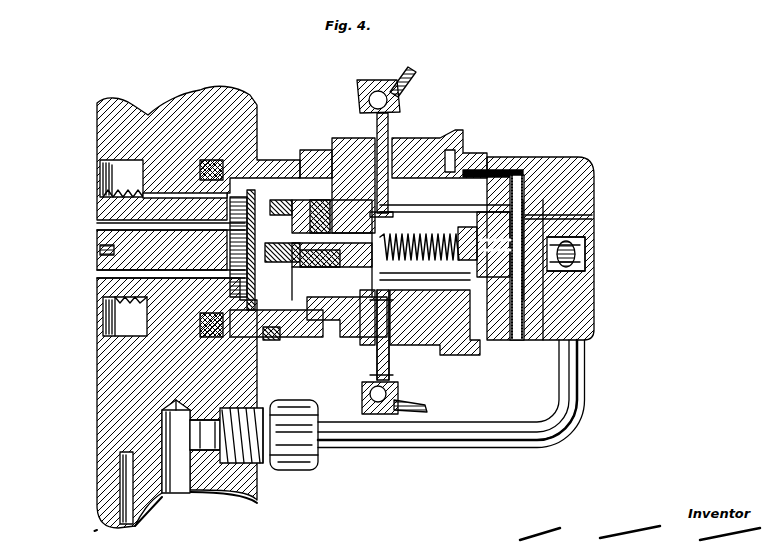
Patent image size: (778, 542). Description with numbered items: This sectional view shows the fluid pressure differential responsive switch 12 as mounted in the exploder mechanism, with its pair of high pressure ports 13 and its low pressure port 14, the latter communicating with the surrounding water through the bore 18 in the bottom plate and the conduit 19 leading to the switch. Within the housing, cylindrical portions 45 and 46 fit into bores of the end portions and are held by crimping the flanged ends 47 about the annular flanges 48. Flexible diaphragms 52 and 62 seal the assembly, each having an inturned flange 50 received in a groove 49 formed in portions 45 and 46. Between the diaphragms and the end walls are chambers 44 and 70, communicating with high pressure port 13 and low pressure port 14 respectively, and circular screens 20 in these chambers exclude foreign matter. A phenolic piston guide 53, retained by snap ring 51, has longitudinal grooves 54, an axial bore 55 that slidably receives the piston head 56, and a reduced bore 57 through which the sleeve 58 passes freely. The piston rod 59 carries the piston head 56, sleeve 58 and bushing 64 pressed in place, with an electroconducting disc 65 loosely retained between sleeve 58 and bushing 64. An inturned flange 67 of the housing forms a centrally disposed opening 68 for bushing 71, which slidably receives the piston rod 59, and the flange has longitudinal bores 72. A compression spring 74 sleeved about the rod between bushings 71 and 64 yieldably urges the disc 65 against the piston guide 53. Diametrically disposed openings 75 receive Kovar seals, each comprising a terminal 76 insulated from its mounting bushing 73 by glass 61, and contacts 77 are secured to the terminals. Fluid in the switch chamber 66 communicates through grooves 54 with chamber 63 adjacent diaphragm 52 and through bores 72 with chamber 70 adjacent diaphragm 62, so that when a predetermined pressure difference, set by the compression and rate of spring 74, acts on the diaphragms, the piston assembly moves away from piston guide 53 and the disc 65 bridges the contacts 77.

The fluid pressure differential responsive switch 12 is at (452, 96).
The high pressure port 13 is at (100, 272).
The low pressure port 14 is at (576, 252).
The bore 18 is at (185, 495).
The conduit 19 is at (420, 441).
The circular screen 20 is at (223, 207).
The chamber 44 is at (258, 330).
The cylindrical portion of the housing 45 is at (300, 345).
The cylindrical portion of the housing 46 is at (478, 168).
The flanged end 47 is at (308, 155).
The annular flange 48 is at (470, 150).
The groove 49 is at (293, 162).
The inturned flange 50 is at (290, 195).
The snap ring 51 is at (250, 198).
The flexible diaphragm 52 is at (252, 222).
The piston guide 53 is at (432, 267).
The longitudinal groove 54 is at (310, 220).
The axial bore 55 is at (300, 292).
The piston head 56 is at (252, 252).
The reduced bore 57 is at (390, 255).
The sleeve 58 is at (414, 237).
The piston rod 59 is at (465, 258).
The glass 61 is at (305, 390).
The flexible diaphragm 62 is at (517, 212).
The chamber 63 is at (275, 340).
The bushing 64 is at (416, 212).
The electroconducting disc 65 is at (385, 288).
The switch chamber 66 is at (460, 355).
The inturned flange 67 is at (442, 358).
The centrally disposed opening 68 is at (476, 218).
The chamber 70 is at (538, 285).
The bushing 71 is at (594, 218).
The longitudinal bore 72 is at (487, 283).
The mounting bushing 73 is at (370, 165).
The compression spring 74 is at (404, 260).
The opening 75 is at (388, 168).
The terminal 76 is at (365, 85).
The contact 77 is at (410, 350).